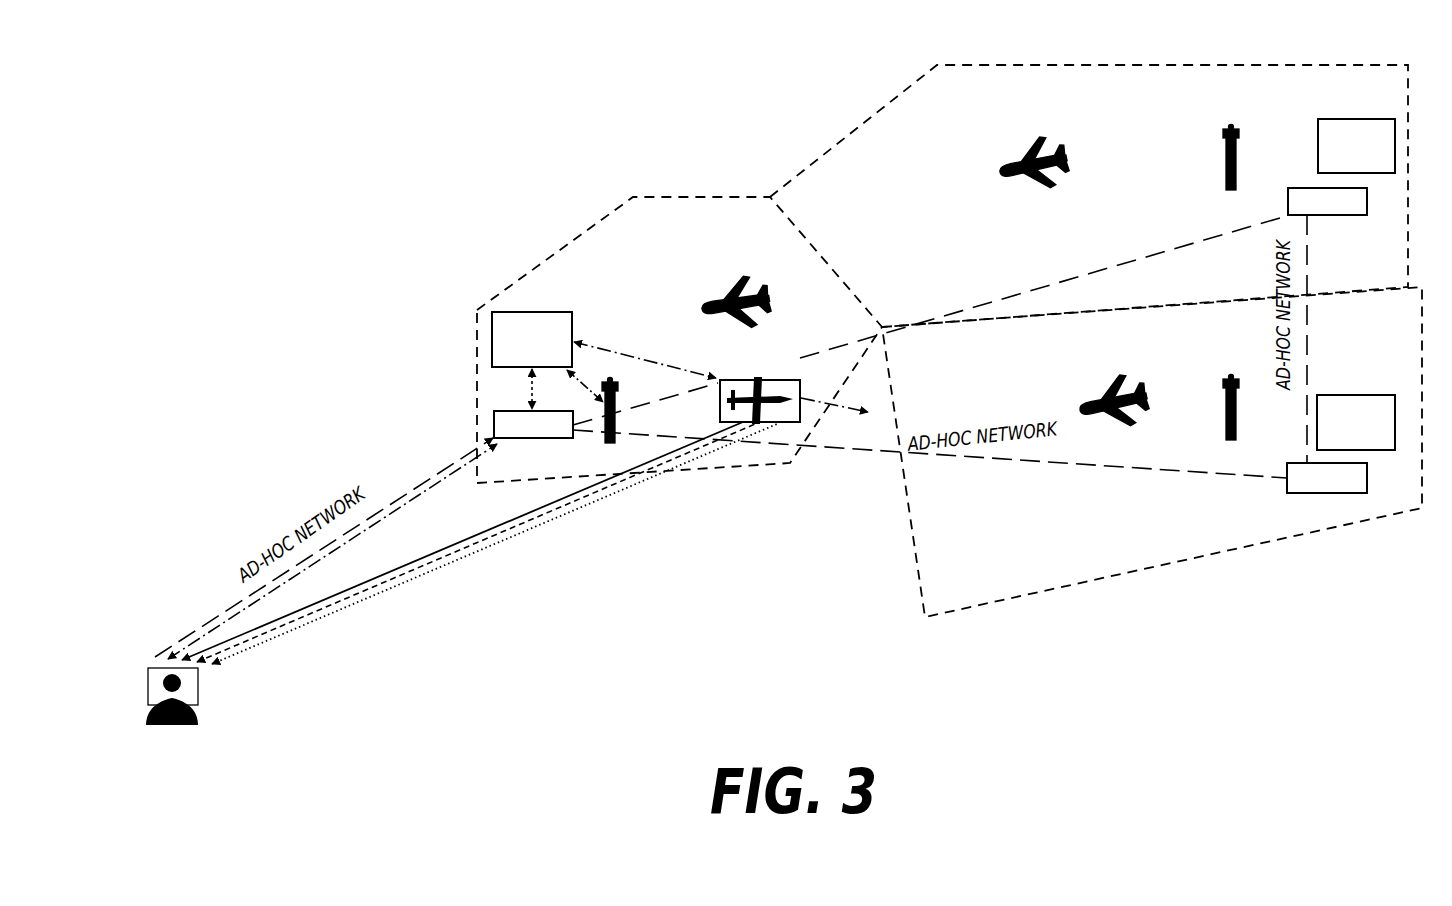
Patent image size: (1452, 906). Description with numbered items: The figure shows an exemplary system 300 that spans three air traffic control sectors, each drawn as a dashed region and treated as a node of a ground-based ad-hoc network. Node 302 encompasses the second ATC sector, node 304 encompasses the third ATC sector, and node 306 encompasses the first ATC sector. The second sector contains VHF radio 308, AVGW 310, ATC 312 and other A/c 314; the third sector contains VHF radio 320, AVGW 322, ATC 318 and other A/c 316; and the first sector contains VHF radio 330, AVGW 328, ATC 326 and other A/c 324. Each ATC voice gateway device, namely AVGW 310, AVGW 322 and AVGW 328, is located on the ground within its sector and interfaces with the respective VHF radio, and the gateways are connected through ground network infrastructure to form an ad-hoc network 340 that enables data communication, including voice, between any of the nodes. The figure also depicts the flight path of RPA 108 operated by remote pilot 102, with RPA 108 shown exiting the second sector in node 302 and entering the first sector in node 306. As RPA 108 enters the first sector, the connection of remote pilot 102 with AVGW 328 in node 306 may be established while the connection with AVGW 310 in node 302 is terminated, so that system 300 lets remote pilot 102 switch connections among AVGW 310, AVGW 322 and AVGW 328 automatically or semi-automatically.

The system 300 is at (313, 178).
The node 302 is at (595, 227).
The node 304 is at (997, 63).
The node 306 is at (1300, 535).
The VHF radio 308 is at (538, 313).
The AVGW 310 is at (532, 440).
The ATC 312 is at (617, 394).
The other A/c 314 is at (703, 308).
The other A/c 316 is at (1000, 172).
The ATC 318 is at (1222, 157).
The VHF radio 320 is at (1357, 119).
The AVGW 322 is at (1300, 188).
The other A/c 324 is at (1083, 408).
The ATC 326 is at (1222, 410).
The AVGW 328 is at (1295, 494).
The VHF radio 330 is at (1348, 395).
The ad-hoc network 340 is at (1120, 267).
The RPA 108 is at (790, 380).
The remote pilot 102 is at (200, 717).